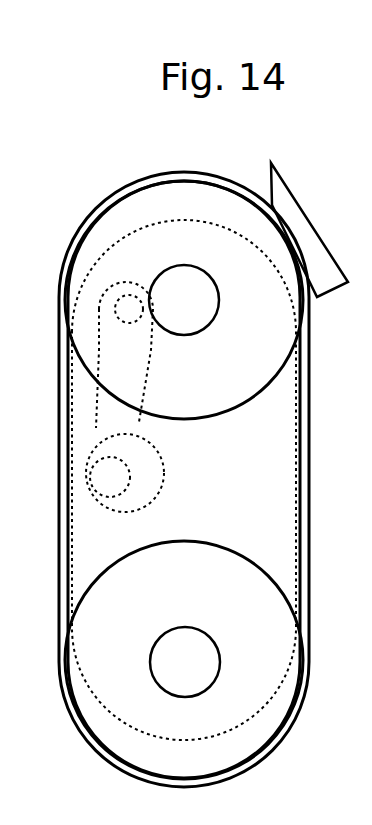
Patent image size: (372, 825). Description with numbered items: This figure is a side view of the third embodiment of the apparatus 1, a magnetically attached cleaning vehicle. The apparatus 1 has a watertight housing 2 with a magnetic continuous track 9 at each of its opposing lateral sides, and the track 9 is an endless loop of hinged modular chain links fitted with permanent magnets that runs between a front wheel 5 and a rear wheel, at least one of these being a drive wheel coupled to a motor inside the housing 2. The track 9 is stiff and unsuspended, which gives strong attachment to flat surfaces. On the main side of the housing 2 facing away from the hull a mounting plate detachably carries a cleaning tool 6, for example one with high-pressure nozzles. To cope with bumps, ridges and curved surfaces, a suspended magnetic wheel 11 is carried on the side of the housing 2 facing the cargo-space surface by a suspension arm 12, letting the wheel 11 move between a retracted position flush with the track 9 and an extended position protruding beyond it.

The apparatus 1 is at (116, 156).
The watertight housing 2 is at (250, 487).
The front wheel 5 is at (258, 317).
The cleaning tool 6 is at (298, 208).
The magnetic continuous track 9 is at (308, 420).
The suspended magnetic wheel 11 is at (96, 514).
The suspension arm 12 is at (107, 417).